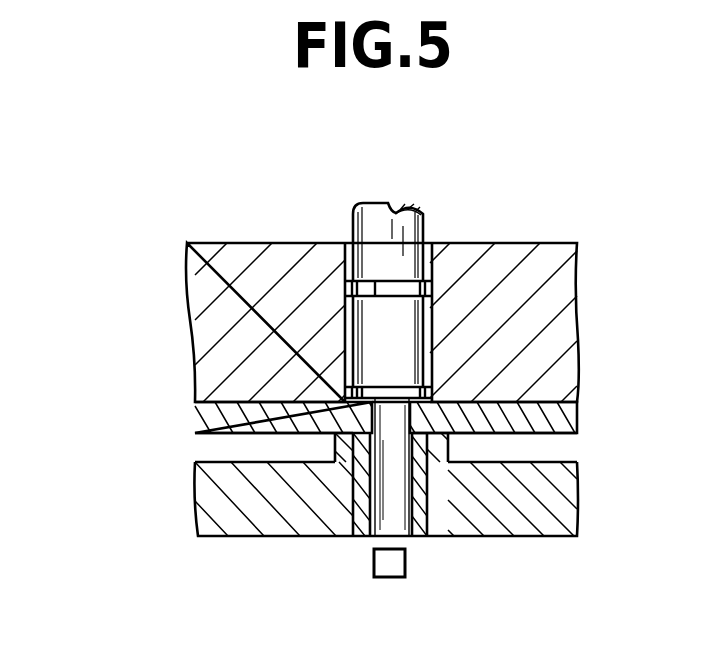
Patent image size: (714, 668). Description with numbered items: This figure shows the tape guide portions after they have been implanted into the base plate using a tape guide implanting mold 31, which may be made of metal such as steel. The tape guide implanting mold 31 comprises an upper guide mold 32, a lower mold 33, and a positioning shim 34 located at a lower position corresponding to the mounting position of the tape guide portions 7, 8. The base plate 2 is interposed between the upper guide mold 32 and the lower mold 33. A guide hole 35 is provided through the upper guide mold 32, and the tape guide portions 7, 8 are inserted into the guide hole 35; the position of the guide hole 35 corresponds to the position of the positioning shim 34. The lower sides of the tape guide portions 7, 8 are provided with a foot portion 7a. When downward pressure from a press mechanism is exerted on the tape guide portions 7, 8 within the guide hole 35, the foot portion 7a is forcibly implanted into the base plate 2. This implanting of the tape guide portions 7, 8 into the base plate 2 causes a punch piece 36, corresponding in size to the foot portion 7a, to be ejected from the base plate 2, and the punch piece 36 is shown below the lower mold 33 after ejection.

The base plate 2 is at (573, 417).
The tape guide portion 7 is at (345, 303).
The foot portion 7a is at (392, 403).
The tape guide portion 8 is at (419, 339).
The tape guide implanting mold 31 is at (72, 322).
The upper guide mold 32 is at (203, 330).
The lower mold 33 is at (203, 492).
The positioning shim 34 is at (335, 442).
The guide hole 35 is at (345, 343).
The punch piece 36 is at (392, 567).